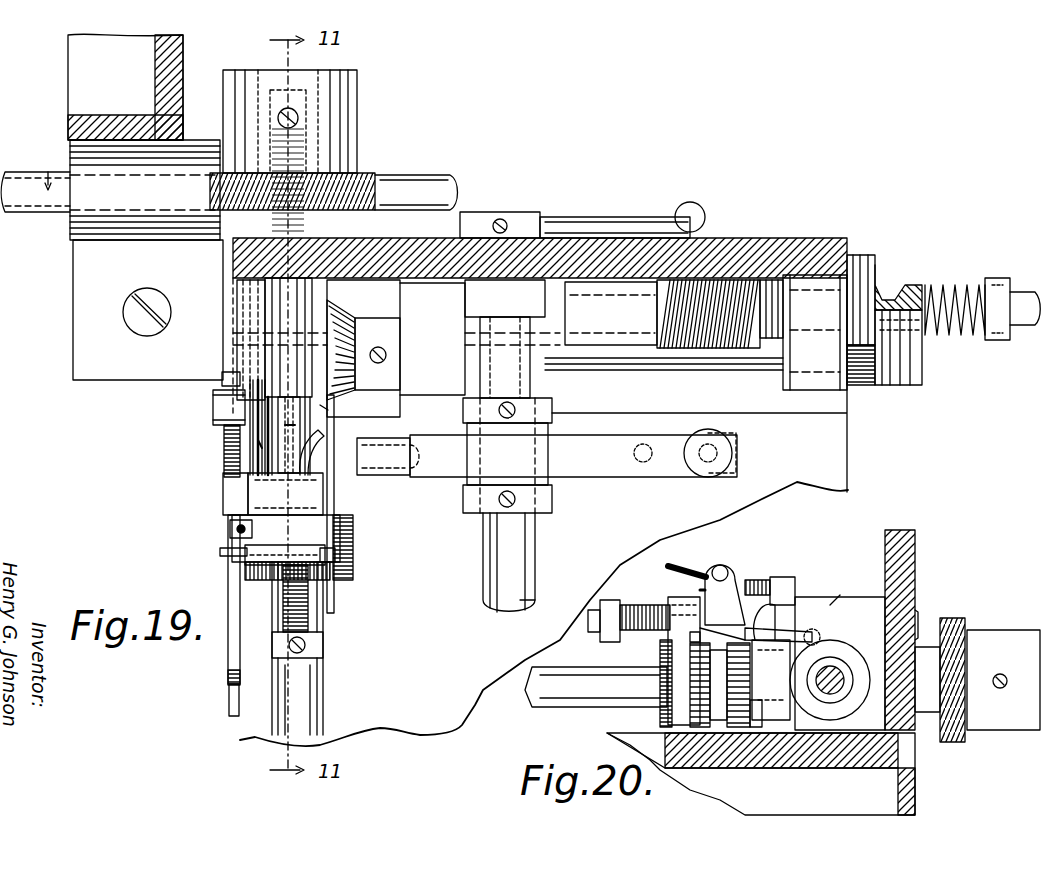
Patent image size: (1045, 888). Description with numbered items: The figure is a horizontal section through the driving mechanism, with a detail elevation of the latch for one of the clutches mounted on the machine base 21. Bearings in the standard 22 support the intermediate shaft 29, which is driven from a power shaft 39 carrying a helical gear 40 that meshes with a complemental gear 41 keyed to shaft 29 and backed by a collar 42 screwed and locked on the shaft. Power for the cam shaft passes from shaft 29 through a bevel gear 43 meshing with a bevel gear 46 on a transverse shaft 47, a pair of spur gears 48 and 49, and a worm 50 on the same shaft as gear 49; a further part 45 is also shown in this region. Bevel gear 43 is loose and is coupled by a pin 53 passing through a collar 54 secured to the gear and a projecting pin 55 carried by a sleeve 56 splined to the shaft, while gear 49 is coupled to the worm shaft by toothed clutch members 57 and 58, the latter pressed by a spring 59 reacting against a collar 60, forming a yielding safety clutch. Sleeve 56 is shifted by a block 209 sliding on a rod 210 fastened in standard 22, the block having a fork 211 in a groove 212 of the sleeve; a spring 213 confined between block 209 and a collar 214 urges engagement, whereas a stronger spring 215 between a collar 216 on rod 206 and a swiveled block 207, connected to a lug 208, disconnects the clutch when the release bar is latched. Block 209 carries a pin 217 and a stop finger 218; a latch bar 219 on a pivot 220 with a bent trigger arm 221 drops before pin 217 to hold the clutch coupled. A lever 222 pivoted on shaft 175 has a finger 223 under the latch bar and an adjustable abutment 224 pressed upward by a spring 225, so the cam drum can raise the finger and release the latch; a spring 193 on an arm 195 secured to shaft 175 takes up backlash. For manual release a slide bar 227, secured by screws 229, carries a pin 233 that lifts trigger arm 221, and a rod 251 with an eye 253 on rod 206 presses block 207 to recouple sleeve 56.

In FIG. 19, the base 21 is at (423, 700).
In FIG. 20, the base 21 is at (865, 760).
In FIG. 19, the standard 22 is at (415, 258).
In FIG. 20, the standard 22 is at (900, 555).
In FIG. 19, the intermediate shaft 29 is at (312, 682).
In FIG. 20, the intermediate shaft 29 is at (565, 690).
In FIG. 19, the power shaft 39 is at (430, 178).
In FIG. 19, the helical gear 40 is at (330, 150).
In FIG. 19, the helical gear 41 is at (360, 172).
In FIG. 20, the helical gear 41 is at (950, 622).
In FIG. 19, the collar 42 is at (340, 100).
In FIG. 20, the collar 42 is at (1005, 645).
In FIG. 20, the bevel gear 43 is at (802, 732).
In FIG. 19, the pin 45 is at (326, 414).
In FIG. 19, the bevel gear 46 is at (350, 325).
In FIG. 20, the bevel gear 46 is at (842, 665).
In FIG. 19, the transverse shaft 47 is at (713, 366).
In FIG. 20, the transverse shaft 47 is at (840, 690).
In FIG. 19, the spur gear 48 is at (868, 386).
In FIG. 19, the spur gear 49 is at (850, 255).
In FIG. 19, the worm 50 is at (735, 262).
In FIG. 20, the pin 53 is at (740, 685).
In FIG. 20, the collar 54 is at (764, 716).
In FIG. 20, the projecting pin 55 is at (718, 660).
In FIG. 20, the sleeve 56 is at (702, 685).
In FIG. 19, the clutch member 57 is at (888, 262).
In FIG. 19, the clutch member 58 is at (910, 262).
In FIG. 19, the spring 59 is at (948, 285).
In FIG. 19, the collar 60 is at (990, 280).
In FIG. 19, the shaft 175 is at (505, 605).
In FIG. 19, the spring 193 is at (691, 202).
In FIG. 19, the arm 195 is at (595, 216).
In FIG. 19, the rod 206 is at (228, 580).
In FIG. 20, the rod 206 is at (680, 565).
In FIG. 19, the block 207 is at (236, 500).
In FIG. 20, the block 207 is at (724, 565).
In FIG. 19, the lug 208 is at (340, 526).
In FIG. 20, the lug 208 is at (745, 580).
In FIG. 19, the block 209 is at (340, 556).
In FIG. 20, the block 209 is at (682, 598).
In FIG. 19, the rod 210 is at (258, 446).
In FIG. 20, the rod 210 is at (592, 622).
In FIG. 19, the fork 211 is at (335, 560).
In FIG. 19, the groove 212 is at (350, 566).
In FIG. 20, the groove 212 is at (680, 693).
In FIG. 19, the spring 213 is at (310, 618).
In FIG. 20, the spring 213 is at (655, 620).
In FIG. 19, the collar 214 is at (322, 646).
In FIG. 20, the collar 214 is at (612, 628).
In FIG. 19, the spring 215 is at (221, 460).
In FIG. 20, the spring 215 is at (760, 582).
In FIG. 19, the collar 216 is at (213, 405).
In FIG. 20, the collar 216 is at (782, 578).
In FIG. 19, the pin 217 is at (230, 532).
In FIG. 20, the pin 217 is at (697, 640).
In FIG. 19, the finger 218 is at (315, 438).
In FIG. 20, the finger 218 is at (778, 630).
In FIG. 19, the latch bar 219 is at (335, 586).
In FIG. 20, the latch bar 219 is at (688, 650).
In FIG. 19, the pivot 220 is at (222, 383).
In FIG. 20, the pivot 220 is at (830, 612).
In FIG. 19, the trigger arm 221 is at (292, 436).
In FIG. 19, the lever 222 is at (602, 458).
In FIG. 19, the finger 223 is at (358, 472).
In FIG. 20, the finger 223 is at (758, 660).
In FIG. 19, the adjustable abutment 224 is at (722, 447).
In FIG. 19, the spring 225 is at (643, 464).
In FIG. 19, the slide bar 227 is at (229, 698).
In FIG. 19, the screw 229 is at (225, 345).
In FIG. 19, the pin 233 is at (226, 490).
In FIG. 19, the rod 251 is at (228, 676).
In FIG. 19, the eye 253 is at (220, 553).